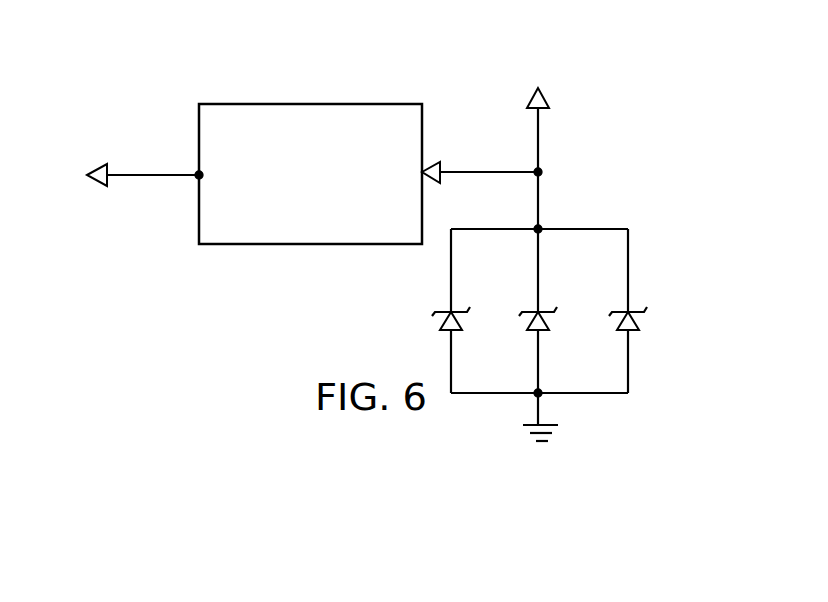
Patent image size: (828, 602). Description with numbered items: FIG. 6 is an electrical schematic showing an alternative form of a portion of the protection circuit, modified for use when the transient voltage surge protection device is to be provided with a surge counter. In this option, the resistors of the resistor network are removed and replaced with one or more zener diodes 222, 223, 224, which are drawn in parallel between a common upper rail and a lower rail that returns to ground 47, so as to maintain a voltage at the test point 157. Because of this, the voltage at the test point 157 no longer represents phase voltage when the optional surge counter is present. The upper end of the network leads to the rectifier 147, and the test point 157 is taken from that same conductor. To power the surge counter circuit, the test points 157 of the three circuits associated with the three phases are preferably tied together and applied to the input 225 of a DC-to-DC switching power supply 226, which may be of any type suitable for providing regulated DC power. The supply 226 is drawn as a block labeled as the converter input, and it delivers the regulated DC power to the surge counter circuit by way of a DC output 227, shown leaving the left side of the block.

The ground 47 is at (540, 443).
The rectifier connection 147 is at (536, 87).
The test point 157 is at (546, 171).
The zener diode 222 is at (641, 318).
The zener diode 223 is at (546, 331).
The zener diode 224 is at (437, 320).
The input 225 is at (433, 158).
The DC-to-DC switching power supply 226 is at (245, 244).
The DC output 227 is at (97, 171).